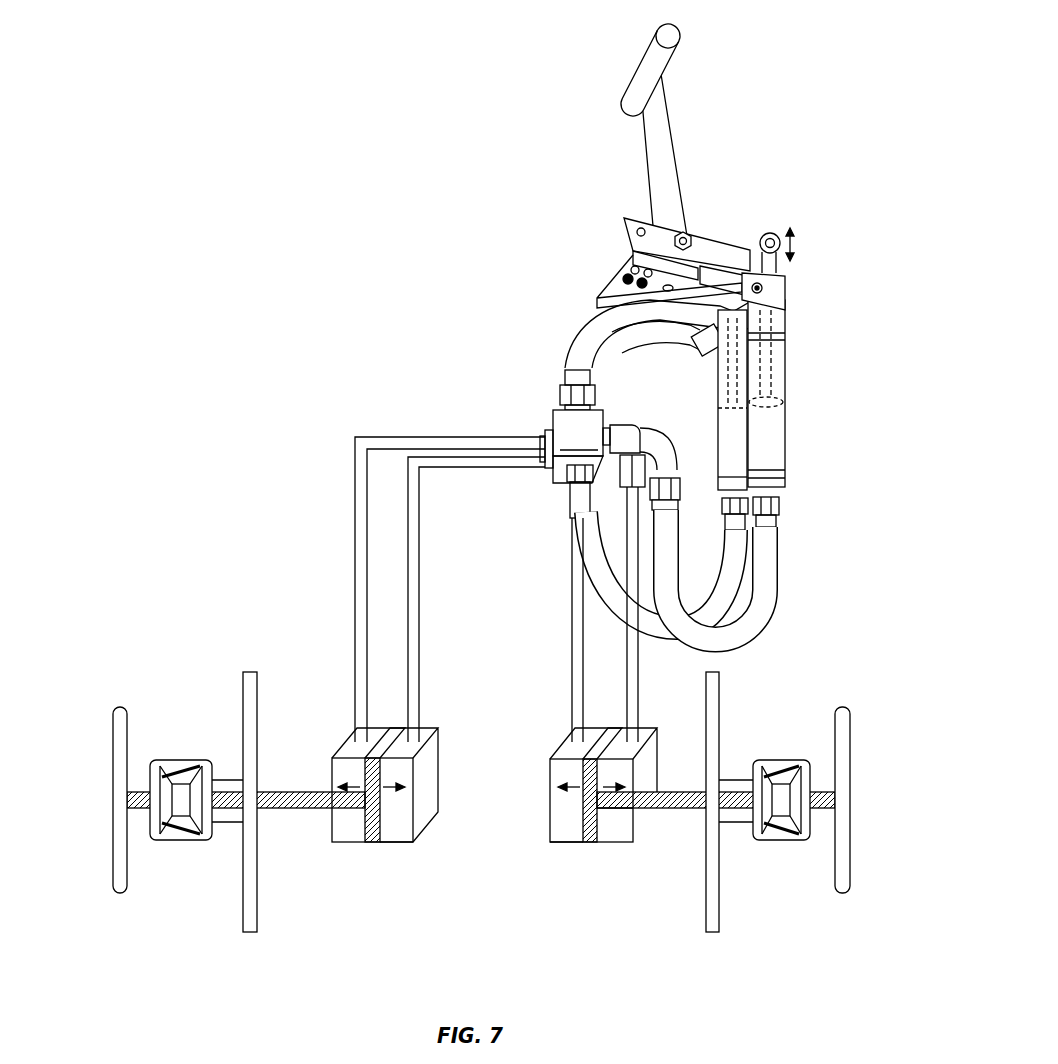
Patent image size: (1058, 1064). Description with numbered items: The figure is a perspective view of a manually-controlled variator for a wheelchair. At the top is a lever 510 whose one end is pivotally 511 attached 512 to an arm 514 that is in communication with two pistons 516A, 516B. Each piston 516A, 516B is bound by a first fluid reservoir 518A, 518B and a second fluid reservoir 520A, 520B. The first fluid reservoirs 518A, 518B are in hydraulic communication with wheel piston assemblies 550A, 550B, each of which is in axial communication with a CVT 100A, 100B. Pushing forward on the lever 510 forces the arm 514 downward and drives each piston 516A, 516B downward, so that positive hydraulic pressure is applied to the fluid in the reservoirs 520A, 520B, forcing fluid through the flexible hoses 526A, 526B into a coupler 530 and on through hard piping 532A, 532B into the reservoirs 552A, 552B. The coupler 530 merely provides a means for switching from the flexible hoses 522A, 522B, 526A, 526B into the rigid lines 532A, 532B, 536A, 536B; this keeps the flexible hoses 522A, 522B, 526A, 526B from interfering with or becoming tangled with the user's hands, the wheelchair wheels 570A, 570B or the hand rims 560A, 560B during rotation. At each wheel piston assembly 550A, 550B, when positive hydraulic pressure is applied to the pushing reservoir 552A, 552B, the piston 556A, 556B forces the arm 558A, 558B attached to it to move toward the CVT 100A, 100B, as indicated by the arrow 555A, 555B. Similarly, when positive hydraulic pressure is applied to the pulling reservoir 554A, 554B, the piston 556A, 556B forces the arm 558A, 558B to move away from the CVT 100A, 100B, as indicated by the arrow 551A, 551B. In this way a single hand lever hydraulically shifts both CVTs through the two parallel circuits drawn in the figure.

The lever 510 is at (664, 133).
The pivotal attachment 511 is at (692, 243).
The attachment 512 is at (770, 233).
The arm 514 is at (775, 272).
The piston 516A is at (784, 414).
The piston 516B is at (720, 411).
The first fluid reservoir 518A is at (800, 413).
The first fluid reservoir 518B is at (752, 420).
The second fluid reservoir 520A is at (760, 440).
The second fluid reservoir 520B is at (737, 470).
The flexible hose 522A is at (688, 313).
The flexible hose 522B is at (645, 326).
The flexible hose 526A is at (777, 568).
The flexible hose 526B is at (722, 597).
The coupler 530 is at (592, 444).
The hard piping 532A is at (573, 576).
The hard piping 532B is at (421, 663).
The rigid line 536A is at (640, 670).
The rigid line 536B is at (356, 670).
The wheel piston assembly 550A is at (593, 803).
The wheel piston assembly 550B is at (383, 826).
The arrow 551A is at (563, 790).
The arrow 551B is at (402, 783).
The pushing reservoir 552A is at (556, 840).
The pushing reservoir 552B is at (388, 845).
The pulling reservoir 554A is at (612, 826).
The pulling reservoir 554B is at (405, 806).
The arrow 555A is at (612, 786).
The arrow 555B is at (350, 783).
The piston 556A is at (588, 845).
The piston 556B is at (378, 845).
The arm 558A is at (703, 780).
The arm 558B is at (265, 792).
The hand rim 560A is at (711, 925).
The hand rim 560B is at (250, 926).
The wheelchair wheel 570A is at (845, 838).
The wheelchair wheel 570B is at (113, 835).
The CVT 100A is at (770, 845).
The CVT 100B is at (192, 845).